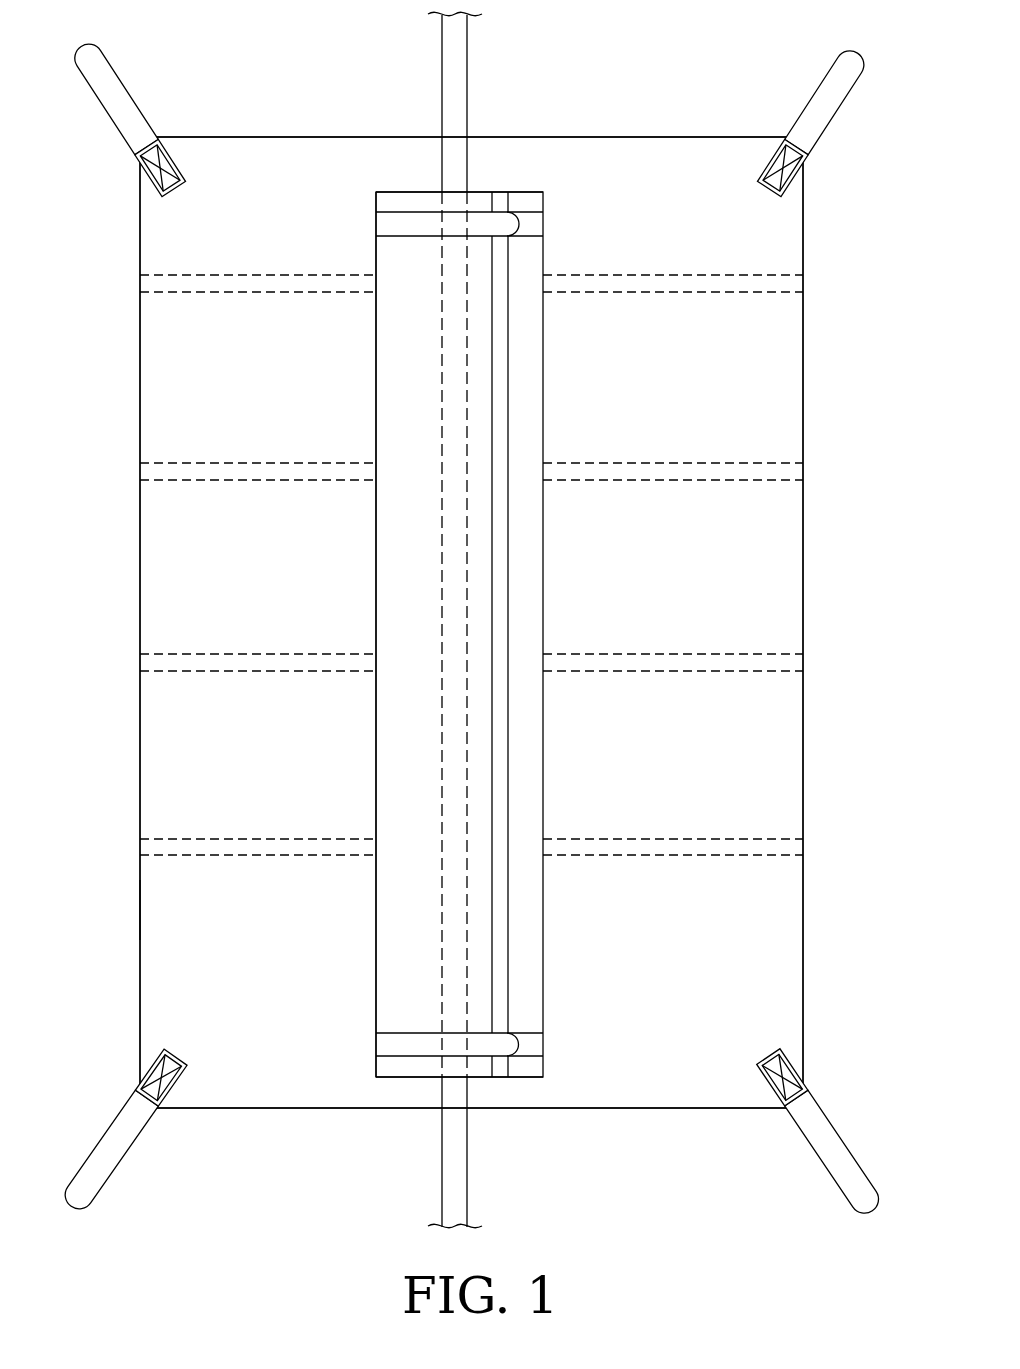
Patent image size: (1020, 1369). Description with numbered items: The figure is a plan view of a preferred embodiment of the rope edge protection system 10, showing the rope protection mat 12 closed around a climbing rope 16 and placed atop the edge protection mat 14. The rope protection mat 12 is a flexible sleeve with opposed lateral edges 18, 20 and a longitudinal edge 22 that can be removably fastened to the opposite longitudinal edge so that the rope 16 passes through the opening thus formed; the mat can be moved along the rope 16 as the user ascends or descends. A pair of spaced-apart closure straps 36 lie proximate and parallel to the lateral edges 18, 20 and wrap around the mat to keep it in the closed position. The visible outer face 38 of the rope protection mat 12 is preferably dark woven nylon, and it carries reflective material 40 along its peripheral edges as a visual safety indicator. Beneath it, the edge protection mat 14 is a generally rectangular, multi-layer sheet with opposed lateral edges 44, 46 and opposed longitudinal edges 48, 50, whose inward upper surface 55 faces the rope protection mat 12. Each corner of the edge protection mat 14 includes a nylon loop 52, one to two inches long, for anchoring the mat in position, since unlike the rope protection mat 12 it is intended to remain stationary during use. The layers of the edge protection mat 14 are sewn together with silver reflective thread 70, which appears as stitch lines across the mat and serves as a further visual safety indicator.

The rope edge protection system 10 is at (706, 52).
The rope protection mat 12 is at (552, 382).
The edge protection mat 14 is at (780, 382).
The climbing rope 16 is at (453, 44).
The lateral edge 18 is at (522, 192).
The lateral edge 20 is at (518, 1077).
The longitudinal edge 22 is at (512, 750).
The closure strap 36 is at (532, 224).
The outer face 38 is at (400, 713).
The reflective material 40 is at (500, 622).
The lateral edge 44 is at (573, 136).
The lateral edge 46 is at (615, 1110).
The longitudinal edge 48 is at (805, 602).
The longitudinal edge 50 is at (140, 612).
The loop 52 is at (120, 97).
The upper surface 55 is at (180, 922).
The reflective thread 70 is at (700, 296).